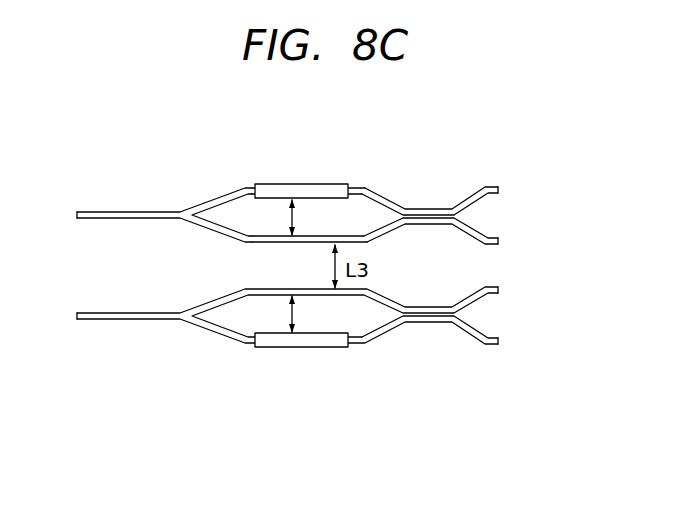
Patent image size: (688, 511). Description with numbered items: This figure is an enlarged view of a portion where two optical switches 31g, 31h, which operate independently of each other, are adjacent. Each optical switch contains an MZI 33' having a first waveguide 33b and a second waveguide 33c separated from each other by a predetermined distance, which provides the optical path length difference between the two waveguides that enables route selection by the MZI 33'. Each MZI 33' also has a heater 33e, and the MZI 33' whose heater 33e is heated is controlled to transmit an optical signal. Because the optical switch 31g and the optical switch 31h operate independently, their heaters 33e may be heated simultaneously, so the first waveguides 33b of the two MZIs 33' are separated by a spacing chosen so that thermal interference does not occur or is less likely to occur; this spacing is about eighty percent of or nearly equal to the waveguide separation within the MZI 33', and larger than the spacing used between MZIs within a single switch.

The optical switch 31g is at (530, 102).
The optical switch 31h is at (530, 273).
The MZI 33' is at (309, 161).
The second waveguide 33c is at (200, 188).
The heater 33e is at (262, 184).
The first waveguide 33b is at (377, 228).